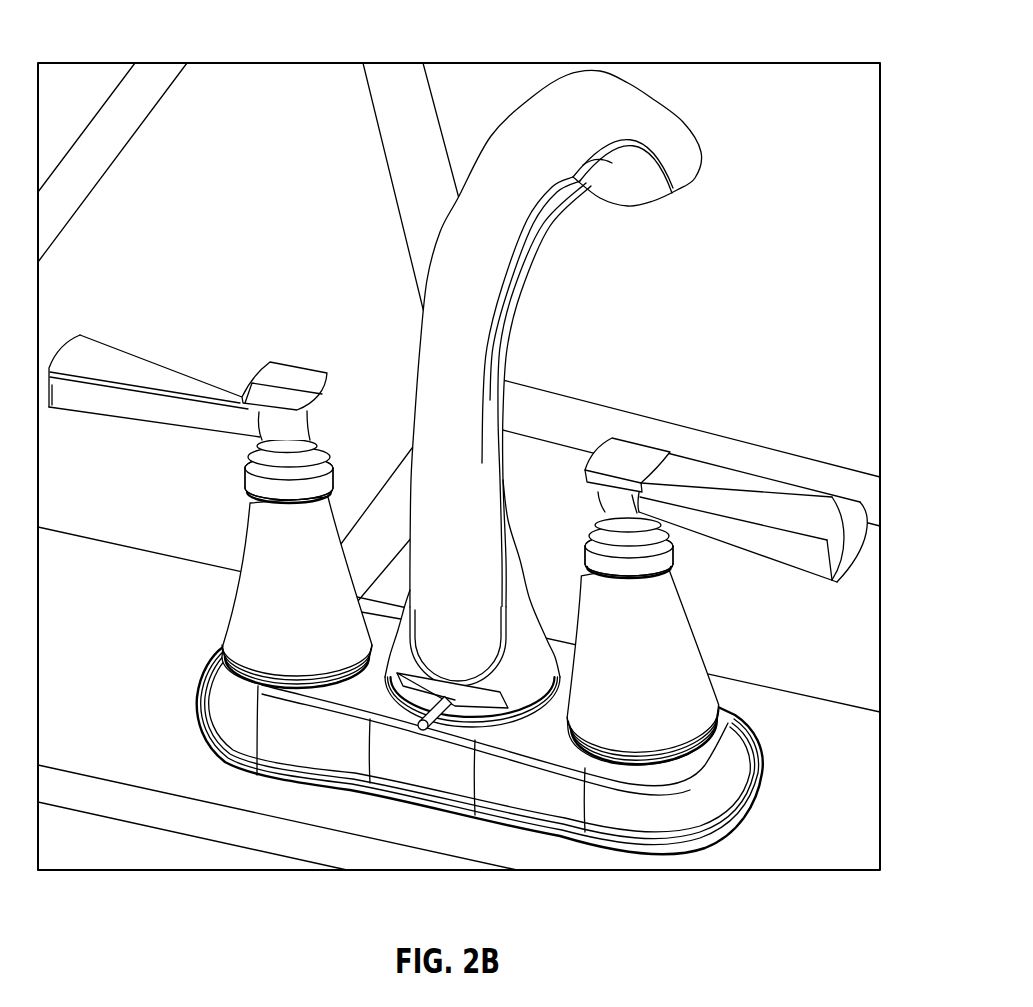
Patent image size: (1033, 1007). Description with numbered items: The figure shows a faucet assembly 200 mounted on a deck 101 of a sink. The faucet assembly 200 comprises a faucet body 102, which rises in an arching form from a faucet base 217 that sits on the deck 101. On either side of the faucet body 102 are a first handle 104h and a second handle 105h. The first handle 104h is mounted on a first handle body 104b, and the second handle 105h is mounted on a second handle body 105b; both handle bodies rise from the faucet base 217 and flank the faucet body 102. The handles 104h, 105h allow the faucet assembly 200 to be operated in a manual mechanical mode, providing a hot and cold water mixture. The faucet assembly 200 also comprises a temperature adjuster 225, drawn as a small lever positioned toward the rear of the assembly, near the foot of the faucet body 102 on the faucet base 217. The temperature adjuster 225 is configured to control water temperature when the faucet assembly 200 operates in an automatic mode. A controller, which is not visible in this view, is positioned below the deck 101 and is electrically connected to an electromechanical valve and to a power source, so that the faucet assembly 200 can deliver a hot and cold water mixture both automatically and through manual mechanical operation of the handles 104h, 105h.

The faucet assembly 200 is at (806, 29).
The deck 101 is at (83, 580).
The faucet body 102 is at (487, 280).
The first handle 104h is at (90, 348).
The first handle body 104b is at (253, 587).
The second handle 105h is at (820, 503).
The second handle body 105b is at (677, 638).
The faucet base 217 is at (728, 767).
The temperature adjuster 225 is at (418, 728).